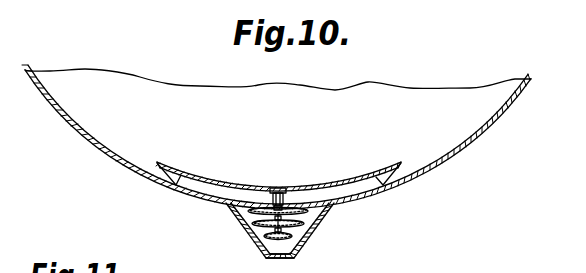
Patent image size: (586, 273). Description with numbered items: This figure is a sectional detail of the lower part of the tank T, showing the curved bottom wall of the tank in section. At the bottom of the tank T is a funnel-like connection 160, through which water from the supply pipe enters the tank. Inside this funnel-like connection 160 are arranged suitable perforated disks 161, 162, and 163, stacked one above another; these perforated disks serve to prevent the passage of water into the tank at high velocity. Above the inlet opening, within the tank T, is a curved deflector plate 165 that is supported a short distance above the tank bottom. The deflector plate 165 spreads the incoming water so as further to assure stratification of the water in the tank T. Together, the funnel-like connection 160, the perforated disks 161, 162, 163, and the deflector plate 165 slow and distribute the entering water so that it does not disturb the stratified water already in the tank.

The tank T is at (497, 116).
The curved deflector plate 165 is at (338, 181).
The funnel-like connection 160 is at (237, 213).
The perforated disk 161 is at (264, 246).
The perforated disk 163 is at (308, 212).
The perforated disk 162 is at (298, 234).